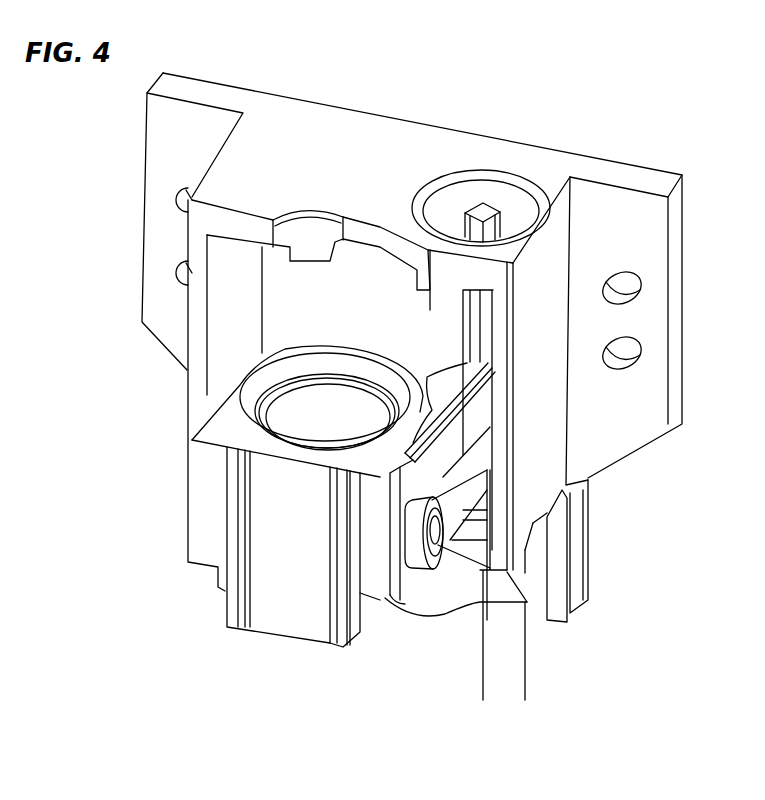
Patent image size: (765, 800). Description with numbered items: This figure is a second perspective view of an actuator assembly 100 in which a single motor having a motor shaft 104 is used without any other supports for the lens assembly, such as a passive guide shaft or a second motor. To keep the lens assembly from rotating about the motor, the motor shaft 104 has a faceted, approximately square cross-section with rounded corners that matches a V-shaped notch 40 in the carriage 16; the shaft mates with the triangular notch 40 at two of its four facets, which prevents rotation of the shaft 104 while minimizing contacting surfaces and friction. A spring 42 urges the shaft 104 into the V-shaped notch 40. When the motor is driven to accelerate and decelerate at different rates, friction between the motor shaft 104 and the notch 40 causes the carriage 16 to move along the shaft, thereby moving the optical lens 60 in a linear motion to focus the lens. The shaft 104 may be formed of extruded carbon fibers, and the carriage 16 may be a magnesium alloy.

The assembly 100 is at (134, 552).
The carriage 16 is at (223, 428).
The V-shaped notch 40 is at (471, 363).
The spring 42 is at (460, 437).
The optical lens 60 is at (330, 423).
The motor shaft 104 is at (477, 213).